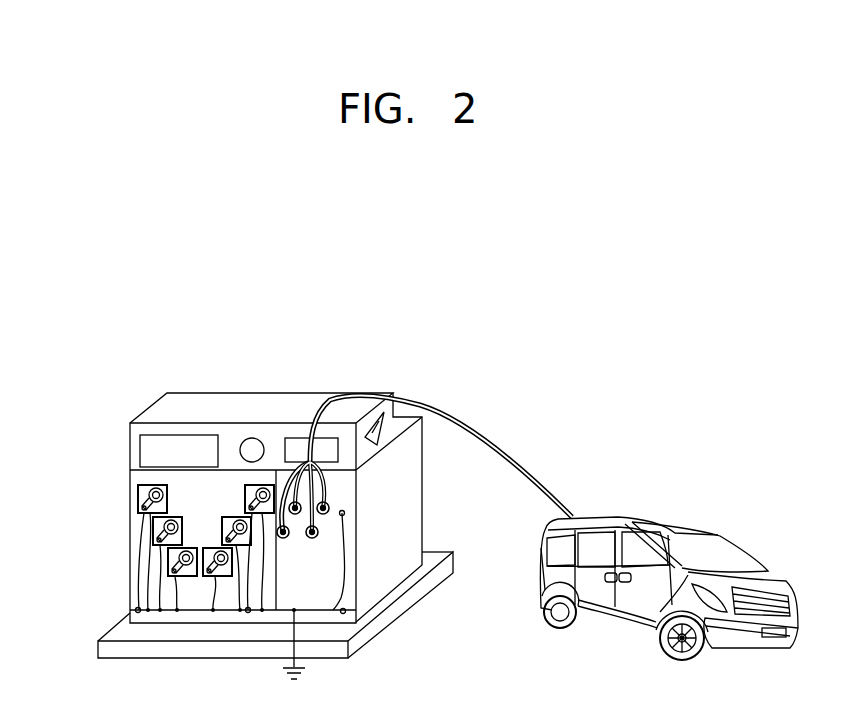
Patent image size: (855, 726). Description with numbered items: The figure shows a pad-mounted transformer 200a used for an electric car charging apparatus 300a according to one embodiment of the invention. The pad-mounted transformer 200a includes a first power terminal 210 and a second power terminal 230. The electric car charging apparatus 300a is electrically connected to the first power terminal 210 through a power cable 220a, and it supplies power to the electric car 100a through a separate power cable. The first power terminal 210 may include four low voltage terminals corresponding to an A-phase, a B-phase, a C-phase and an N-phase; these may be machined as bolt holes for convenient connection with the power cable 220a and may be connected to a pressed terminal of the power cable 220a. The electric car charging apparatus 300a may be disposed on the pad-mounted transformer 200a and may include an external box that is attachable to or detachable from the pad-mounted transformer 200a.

The electric car 100a is at (675, 522).
The pad-mounted transformer 200a is at (297, 526).
The first power terminal 210 is at (330, 524).
The power cable 220a is at (335, 490).
The second power terminal 230 is at (132, 487).
The electric car charging apparatus 300a is at (157, 413).